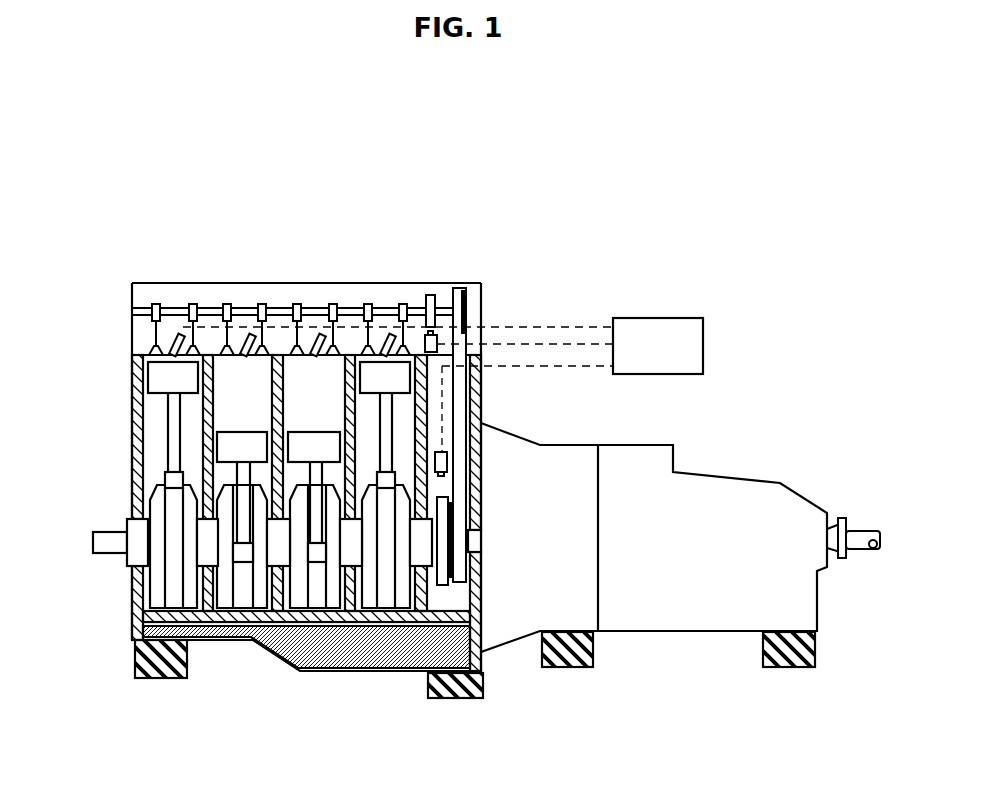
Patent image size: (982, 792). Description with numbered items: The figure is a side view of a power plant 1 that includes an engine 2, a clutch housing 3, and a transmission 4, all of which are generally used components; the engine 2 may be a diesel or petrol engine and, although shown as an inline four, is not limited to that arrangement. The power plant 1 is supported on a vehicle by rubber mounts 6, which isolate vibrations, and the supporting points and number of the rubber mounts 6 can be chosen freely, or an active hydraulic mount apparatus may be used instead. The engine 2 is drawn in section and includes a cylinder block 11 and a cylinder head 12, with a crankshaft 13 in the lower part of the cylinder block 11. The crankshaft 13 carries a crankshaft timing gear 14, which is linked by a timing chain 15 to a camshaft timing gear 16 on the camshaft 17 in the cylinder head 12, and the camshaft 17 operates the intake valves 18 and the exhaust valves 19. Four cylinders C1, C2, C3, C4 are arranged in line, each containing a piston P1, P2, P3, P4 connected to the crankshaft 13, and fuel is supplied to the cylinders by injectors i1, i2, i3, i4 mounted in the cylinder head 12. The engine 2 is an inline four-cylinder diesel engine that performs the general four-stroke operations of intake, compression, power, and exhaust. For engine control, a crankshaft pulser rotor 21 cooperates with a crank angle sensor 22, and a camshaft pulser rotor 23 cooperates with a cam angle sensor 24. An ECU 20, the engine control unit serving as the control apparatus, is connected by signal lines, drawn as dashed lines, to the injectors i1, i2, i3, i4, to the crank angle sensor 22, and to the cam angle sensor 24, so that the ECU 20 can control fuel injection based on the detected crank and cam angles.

The power plant 1 is at (757, 341).
The engine 2 is at (130, 294).
The clutch housing 3 is at (525, 640).
The transmission 4 is at (672, 618).
The rubber mounts 6 is at (136, 660).
The cylinder block 11 is at (135, 478).
The cylinder head 12 is at (145, 337).
The crankshaft 13 is at (142, 555).
The crankshaft timing gear 14 is at (462, 592).
The timing chain 15 is at (482, 422).
The camshaft timing gear 16 is at (466, 318).
The camshaft 17 is at (324, 308).
The intake valves 18 is at (156, 304).
The exhaust valves 19 is at (193, 318).
The ECU 20 is at (663, 322).
The crankshaft pulser rotor 21 is at (481, 482).
The crank angle sensor 22 is at (460, 423).
The camshaft pulser rotor 23 is at (434, 296).
The cam angle sensor 24 is at (437, 338).
The injector i1 is at (180, 336).
The injector i2 is at (250, 336).
The injector i3 is at (320, 336).
The injector i4 is at (390, 334).
The cylinder C1 is at (140, 646).
The cylinder C2 is at (240, 560).
The cylinder C3 is at (306, 592).
The cylinder C4 is at (384, 560).
The piston P1 is at (168, 396).
The piston P2 is at (247, 465).
The piston P3 is at (318, 465).
The piston P4 is at (390, 396).